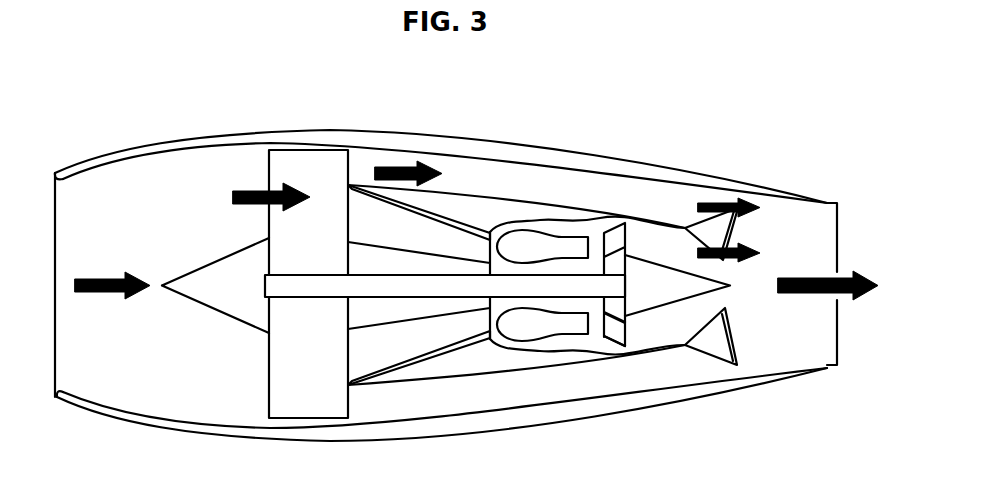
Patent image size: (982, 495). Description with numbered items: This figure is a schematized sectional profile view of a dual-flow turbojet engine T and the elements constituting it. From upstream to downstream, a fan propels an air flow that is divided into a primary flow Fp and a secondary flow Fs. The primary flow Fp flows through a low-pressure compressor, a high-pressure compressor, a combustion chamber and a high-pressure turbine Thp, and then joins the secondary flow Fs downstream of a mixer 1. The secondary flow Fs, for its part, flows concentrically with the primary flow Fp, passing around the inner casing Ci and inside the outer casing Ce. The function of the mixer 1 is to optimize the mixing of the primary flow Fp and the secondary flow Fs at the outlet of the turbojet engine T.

The outer casing Ce is at (140, 147).
The inner casing Ci is at (498, 213).
The dual-flow turbojet engine T is at (574, 114).
The high-pressure turbine Thp is at (613, 328).
The mixer 1 is at (715, 235).
The secondary flow Fs is at (392, 173).
The primary flow Fp is at (750, 247).